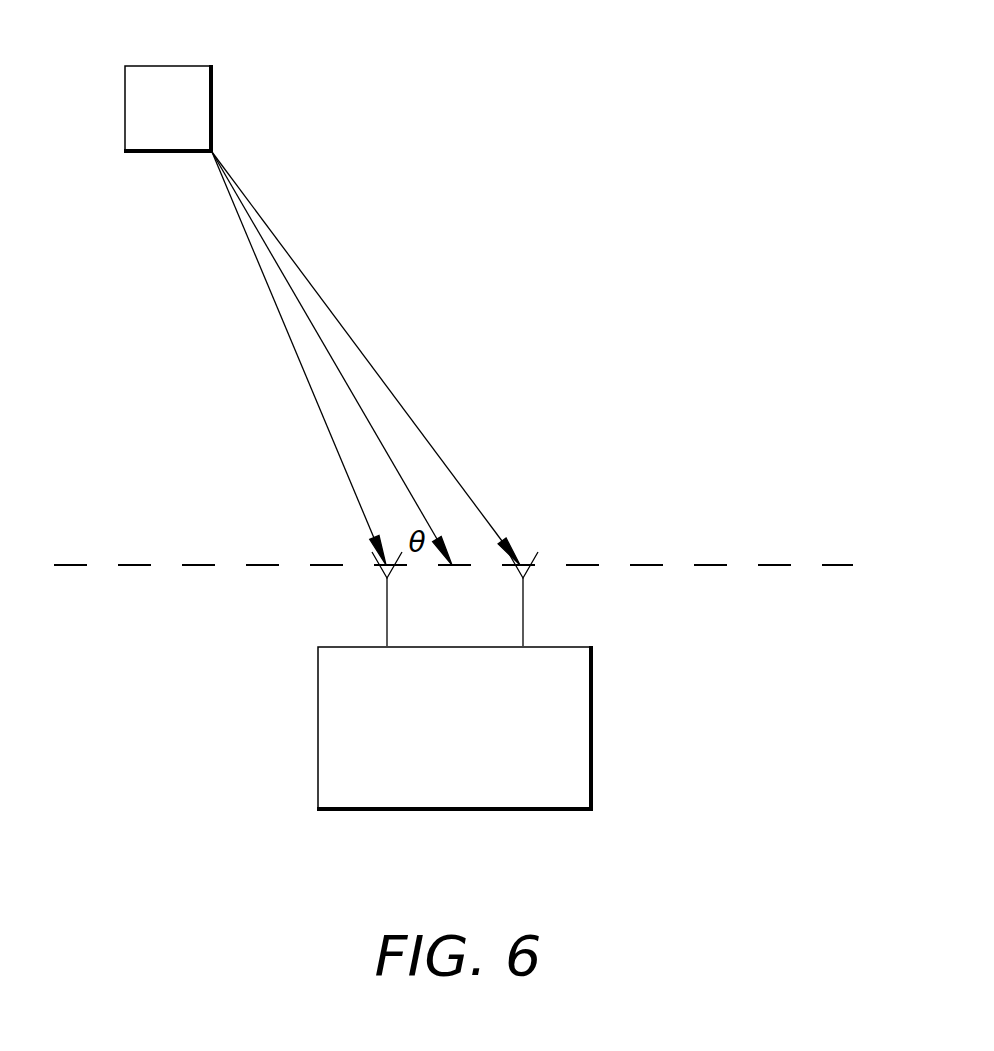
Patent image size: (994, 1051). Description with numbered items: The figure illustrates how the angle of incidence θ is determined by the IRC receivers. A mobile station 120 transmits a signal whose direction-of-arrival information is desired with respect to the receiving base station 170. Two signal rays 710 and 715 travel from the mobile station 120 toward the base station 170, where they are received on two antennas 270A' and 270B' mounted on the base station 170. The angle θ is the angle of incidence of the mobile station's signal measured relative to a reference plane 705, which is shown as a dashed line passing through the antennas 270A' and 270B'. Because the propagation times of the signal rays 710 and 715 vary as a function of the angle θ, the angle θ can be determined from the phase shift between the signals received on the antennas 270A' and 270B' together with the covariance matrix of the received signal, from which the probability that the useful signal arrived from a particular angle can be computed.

The mobile station 120 is at (169, 61).
The signal ray 710 is at (296, 350).
The signal ray 715 is at (362, 348).
The reference plane 705 is at (836, 562).
The antenna 270A' is at (346, 599).
The antenna 270B' is at (561, 599).
The base station 170 is at (453, 812).